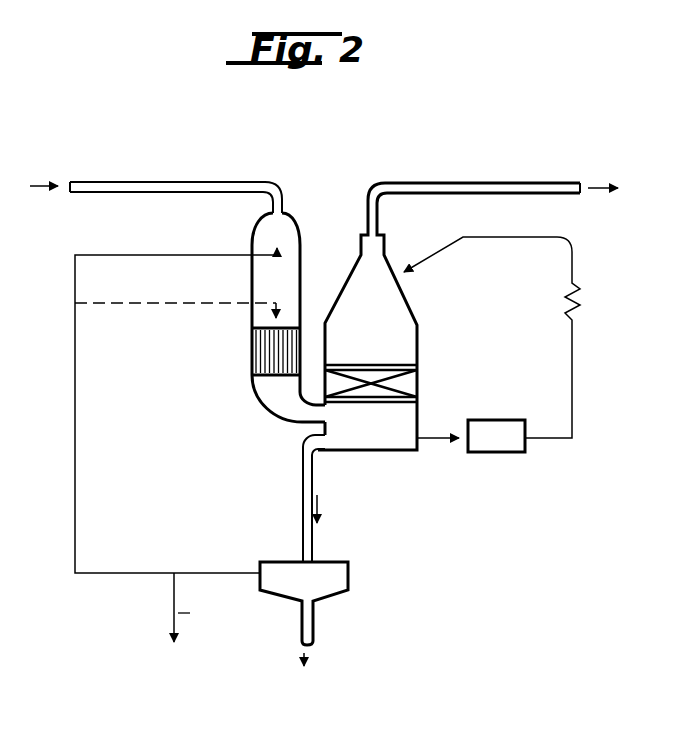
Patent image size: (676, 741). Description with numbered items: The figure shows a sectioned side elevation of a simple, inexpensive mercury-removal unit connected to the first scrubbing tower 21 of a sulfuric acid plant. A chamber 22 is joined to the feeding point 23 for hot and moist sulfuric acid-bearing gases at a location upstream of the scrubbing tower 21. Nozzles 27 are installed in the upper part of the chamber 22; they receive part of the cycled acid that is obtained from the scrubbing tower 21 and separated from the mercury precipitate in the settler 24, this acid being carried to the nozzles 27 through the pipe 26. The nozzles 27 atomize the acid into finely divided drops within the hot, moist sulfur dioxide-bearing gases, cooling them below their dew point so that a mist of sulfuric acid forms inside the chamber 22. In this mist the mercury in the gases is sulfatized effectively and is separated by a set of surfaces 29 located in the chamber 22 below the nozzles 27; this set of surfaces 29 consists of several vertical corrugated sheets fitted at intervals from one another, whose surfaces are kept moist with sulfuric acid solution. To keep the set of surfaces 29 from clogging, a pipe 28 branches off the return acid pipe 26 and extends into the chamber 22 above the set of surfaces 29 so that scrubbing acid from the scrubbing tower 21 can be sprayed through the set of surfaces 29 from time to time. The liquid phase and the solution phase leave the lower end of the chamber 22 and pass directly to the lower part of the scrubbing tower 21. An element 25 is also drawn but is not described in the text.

The scrubbing tower 21 is at (420, 342).
The chamber 22 is at (302, 258).
The feeding point 23 is at (85, 179).
The settler 24 is at (350, 578).
The pump 25 is at (497, 455).
The return acid pipe 26 is at (77, 428).
The nozzles 27 is at (283, 236).
The pipe 28 is at (150, 305).
The set of surfaces 29 is at (252, 362).